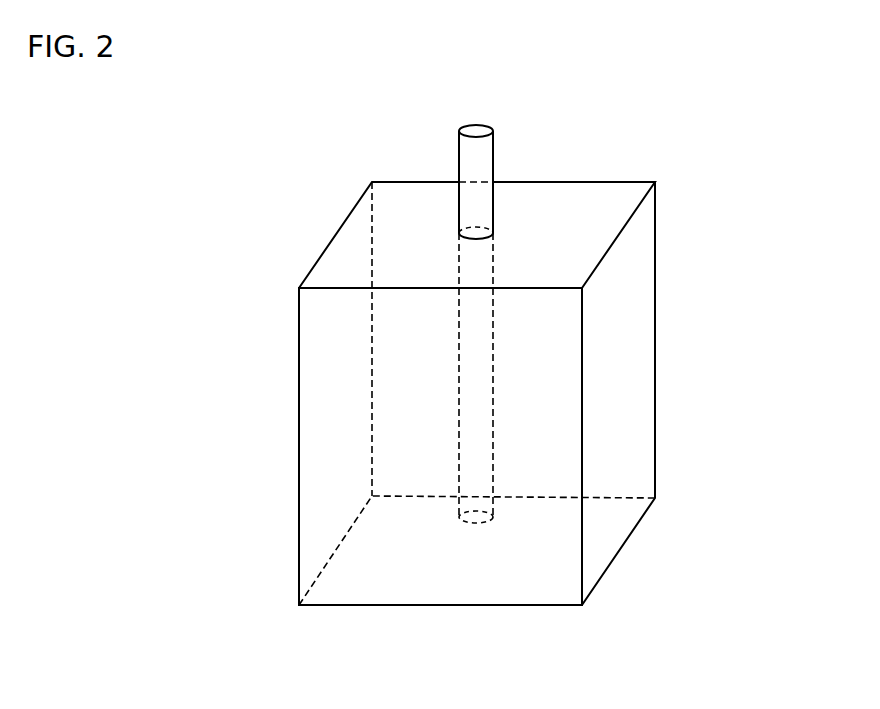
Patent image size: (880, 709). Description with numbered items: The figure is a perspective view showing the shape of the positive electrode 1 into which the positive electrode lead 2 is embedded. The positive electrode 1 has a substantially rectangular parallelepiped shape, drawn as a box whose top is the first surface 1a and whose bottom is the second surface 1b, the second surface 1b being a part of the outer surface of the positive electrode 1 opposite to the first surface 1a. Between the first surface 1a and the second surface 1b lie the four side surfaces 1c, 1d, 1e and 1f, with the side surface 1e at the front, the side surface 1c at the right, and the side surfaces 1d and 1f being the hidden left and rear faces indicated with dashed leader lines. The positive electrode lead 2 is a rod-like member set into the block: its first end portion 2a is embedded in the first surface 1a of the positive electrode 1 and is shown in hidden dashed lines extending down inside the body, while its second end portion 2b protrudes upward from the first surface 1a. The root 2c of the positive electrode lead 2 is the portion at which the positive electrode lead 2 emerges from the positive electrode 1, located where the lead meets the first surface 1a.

The positive electrode 1 is at (492, 386).
The first surface 1a is at (600, 190).
The second surface 1b is at (542, 605).
The side surface 1c is at (640, 412).
The side surface 1d is at (343, 345).
The side surface 1e is at (390, 568).
The side surface 1f is at (610, 402).
The positive electrode lead 2 is at (410, 272).
The first end portion 2a is at (483, 373).
The second end portion 2b is at (483, 160).
The root 2c is at (480, 228).